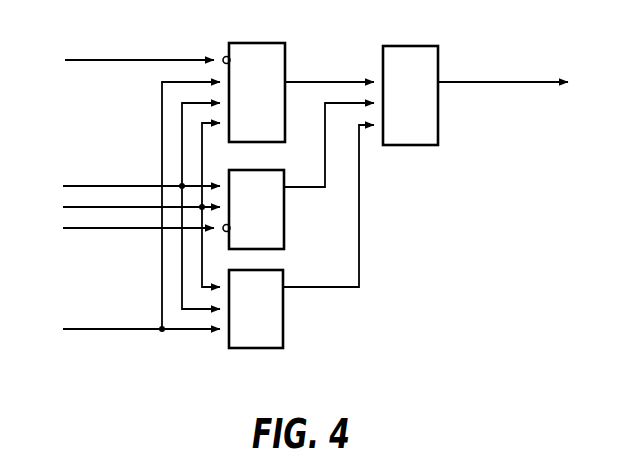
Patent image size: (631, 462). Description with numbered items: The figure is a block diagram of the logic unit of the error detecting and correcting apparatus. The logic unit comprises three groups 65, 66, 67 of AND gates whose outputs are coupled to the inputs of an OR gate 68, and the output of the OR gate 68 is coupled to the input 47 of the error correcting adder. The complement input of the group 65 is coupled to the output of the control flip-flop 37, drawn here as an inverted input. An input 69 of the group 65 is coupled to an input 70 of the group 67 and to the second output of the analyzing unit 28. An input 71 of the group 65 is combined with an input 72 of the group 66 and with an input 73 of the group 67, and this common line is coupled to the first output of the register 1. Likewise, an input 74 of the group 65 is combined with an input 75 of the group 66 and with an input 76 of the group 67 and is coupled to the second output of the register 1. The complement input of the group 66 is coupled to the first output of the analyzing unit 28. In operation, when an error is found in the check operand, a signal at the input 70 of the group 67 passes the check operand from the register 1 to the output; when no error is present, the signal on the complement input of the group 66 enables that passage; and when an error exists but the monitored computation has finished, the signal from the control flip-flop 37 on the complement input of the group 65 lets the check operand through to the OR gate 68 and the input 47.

The group of AND gates 65 is at (285, 65).
The group of AND gates 66 is at (284, 223).
The group of AND gates 67 is at (284, 325).
The OR gate 68 is at (428, 146).
The input of the group 65 69 is at (225, 57).
The input of the group 67 70 is at (228, 330).
The input of the group 65 71 is at (224, 102).
The input of the group 66 72 is at (226, 185).
The input of the group 67 73 is at (227, 313).
The input of the group 65 74 is at (225, 120).
The input of the group 66 75 is at (227, 206).
The input of the group 67 76 is at (227, 286).
The control flip-flop 37 is at (115, 56).
The register 1 is at (121, 191).
The analyzing unit 28 is at (122, 280).
The input of the error correcting adder 47 is at (529, 86).